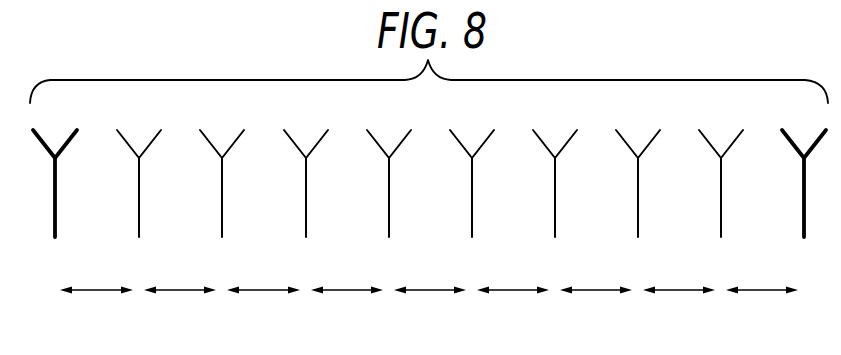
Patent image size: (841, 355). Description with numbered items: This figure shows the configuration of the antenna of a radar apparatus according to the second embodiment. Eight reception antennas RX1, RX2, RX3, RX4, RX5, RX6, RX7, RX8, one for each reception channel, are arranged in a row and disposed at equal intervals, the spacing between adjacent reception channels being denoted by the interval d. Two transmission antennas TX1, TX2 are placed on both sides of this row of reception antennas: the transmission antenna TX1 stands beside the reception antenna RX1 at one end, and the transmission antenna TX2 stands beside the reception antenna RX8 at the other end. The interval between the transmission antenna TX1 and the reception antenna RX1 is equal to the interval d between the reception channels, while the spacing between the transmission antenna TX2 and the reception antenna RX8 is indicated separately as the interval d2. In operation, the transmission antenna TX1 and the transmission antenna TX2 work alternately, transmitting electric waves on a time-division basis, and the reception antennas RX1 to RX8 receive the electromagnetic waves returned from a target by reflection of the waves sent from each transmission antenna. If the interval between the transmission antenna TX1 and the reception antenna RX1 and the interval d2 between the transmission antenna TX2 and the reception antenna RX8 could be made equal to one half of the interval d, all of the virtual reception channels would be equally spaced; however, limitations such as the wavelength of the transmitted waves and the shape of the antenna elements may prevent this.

The transmission antenna TX1 is at (55, 202).
The reception antenna RX1 is at (139, 202).
The reception antenna RX2 is at (222, 202).
The reception antenna RX3 is at (306, 202).
The reception antenna RX4 is at (389, 202).
The reception antenna RX5 is at (472, 202).
The reception antenna RX6 is at (555, 202).
The reception antenna RX7 is at (638, 202).
The reception antenna RX8 is at (721, 202).
The transmission antenna TX2 is at (804, 202).
The interval between reception channels d is at (387, 308).
The interval between TX2 and RX8 d2 is at (762, 308).